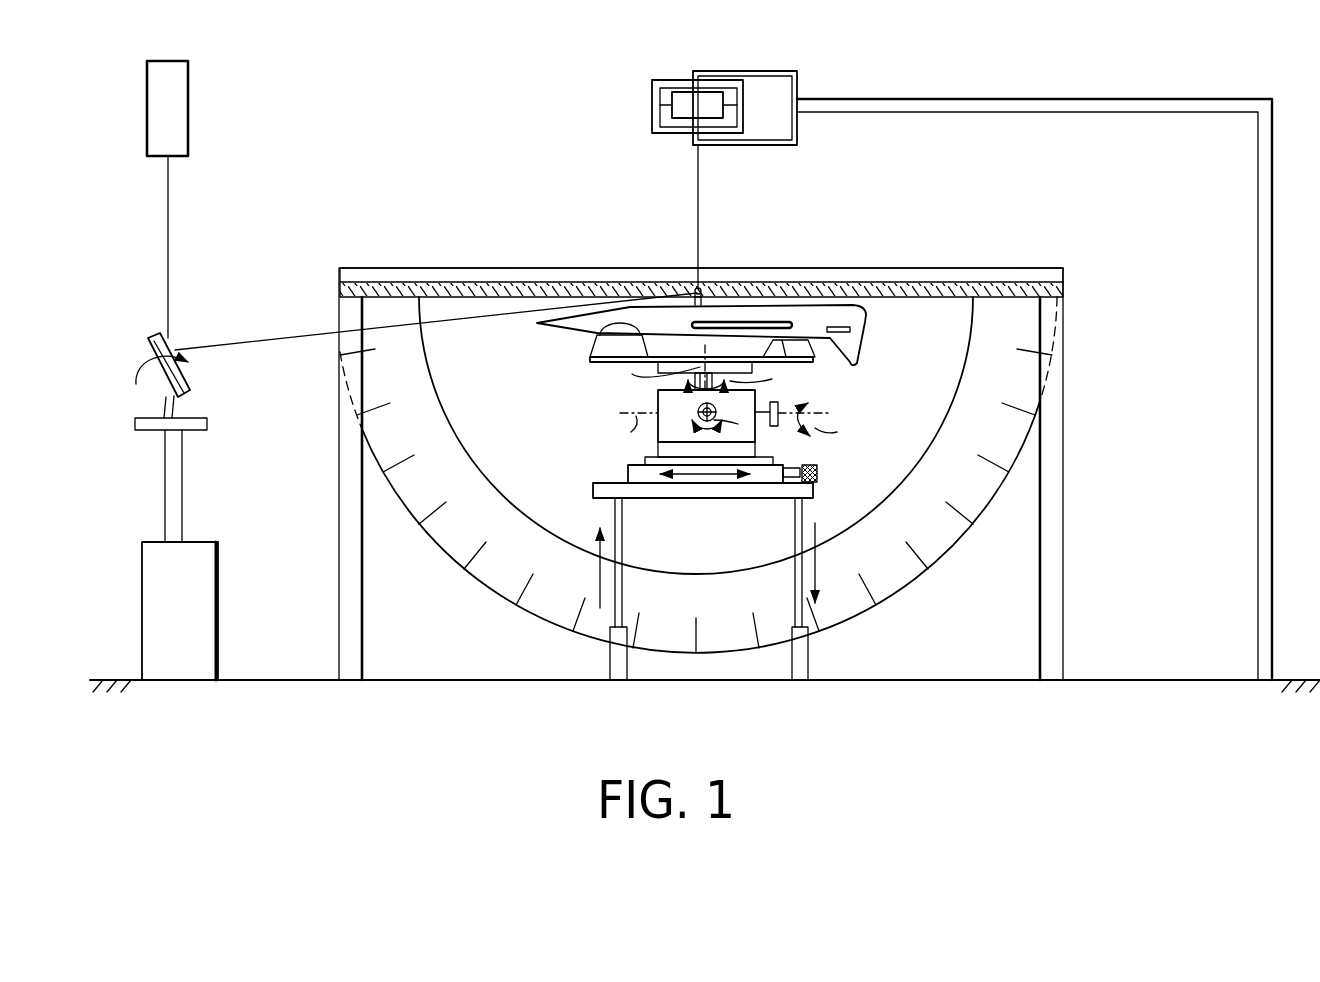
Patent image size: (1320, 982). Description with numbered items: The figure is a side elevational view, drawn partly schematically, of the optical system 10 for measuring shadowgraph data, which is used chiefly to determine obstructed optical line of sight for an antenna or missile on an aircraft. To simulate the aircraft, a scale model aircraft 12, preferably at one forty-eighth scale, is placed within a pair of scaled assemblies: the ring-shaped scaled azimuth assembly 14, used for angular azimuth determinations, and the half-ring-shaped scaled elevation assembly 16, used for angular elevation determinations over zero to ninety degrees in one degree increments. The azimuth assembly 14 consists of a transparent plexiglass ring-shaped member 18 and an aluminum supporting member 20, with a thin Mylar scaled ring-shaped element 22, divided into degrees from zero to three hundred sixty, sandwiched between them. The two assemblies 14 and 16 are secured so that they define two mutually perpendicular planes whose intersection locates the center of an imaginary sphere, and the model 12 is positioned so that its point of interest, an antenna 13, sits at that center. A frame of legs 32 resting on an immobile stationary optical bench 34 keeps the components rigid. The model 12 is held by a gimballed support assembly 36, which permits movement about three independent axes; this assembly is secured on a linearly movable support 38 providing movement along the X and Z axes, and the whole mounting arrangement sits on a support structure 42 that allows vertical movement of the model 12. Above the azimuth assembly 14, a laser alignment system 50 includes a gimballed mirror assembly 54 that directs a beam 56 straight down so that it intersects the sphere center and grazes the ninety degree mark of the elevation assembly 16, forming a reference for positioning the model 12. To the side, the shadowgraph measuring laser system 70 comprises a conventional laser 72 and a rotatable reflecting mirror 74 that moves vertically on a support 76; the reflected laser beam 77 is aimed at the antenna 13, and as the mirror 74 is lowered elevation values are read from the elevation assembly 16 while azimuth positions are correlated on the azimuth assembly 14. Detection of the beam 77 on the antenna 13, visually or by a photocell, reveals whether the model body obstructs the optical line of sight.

The optical system 10 is at (377, 250).
The scale model aircraft 12 is at (828, 352).
The antenna 13 is at (701, 290).
The scaled azimuth assembly 14 is at (907, 255).
The scaled elevation assembly 16 is at (1018, 486).
The ring-shaped member 18 is at (1027, 276).
The supporting member 20 is at (1010, 297).
The scaled ring-shaped element 22 is at (960, 284).
The legs 32 is at (1066, 410).
The optical bench 34 is at (958, 683).
The gimballed support assembly 36 is at (613, 402).
The linearly movable support 38 is at (627, 473).
The support structure 42 is at (828, 604).
The laser alignment system 50 is at (789, 53).
The gimballed mirror assembly 54 is at (670, 147).
The beam 56 is at (698, 188).
The shadowgraph measuring laser system 70 is at (219, 120).
The laser 72 is at (147, 128).
The rotatable reflecting mirror 74 is at (148, 344).
The support 76 is at (141, 608).
The laser beam 77 is at (271, 338).